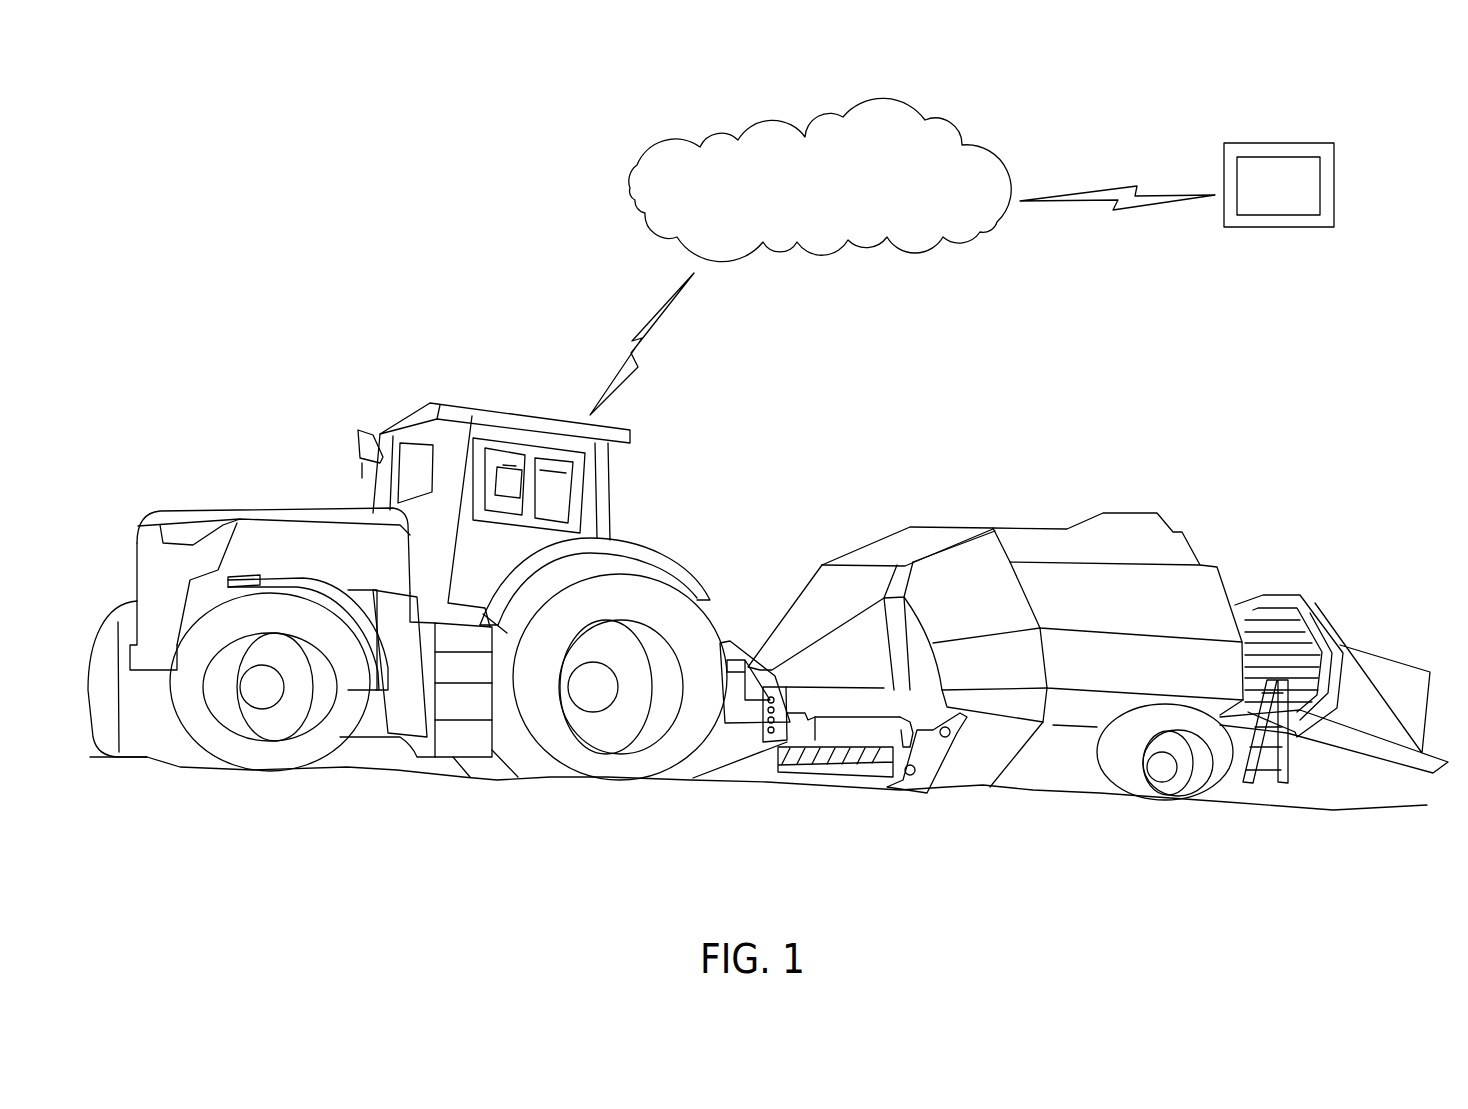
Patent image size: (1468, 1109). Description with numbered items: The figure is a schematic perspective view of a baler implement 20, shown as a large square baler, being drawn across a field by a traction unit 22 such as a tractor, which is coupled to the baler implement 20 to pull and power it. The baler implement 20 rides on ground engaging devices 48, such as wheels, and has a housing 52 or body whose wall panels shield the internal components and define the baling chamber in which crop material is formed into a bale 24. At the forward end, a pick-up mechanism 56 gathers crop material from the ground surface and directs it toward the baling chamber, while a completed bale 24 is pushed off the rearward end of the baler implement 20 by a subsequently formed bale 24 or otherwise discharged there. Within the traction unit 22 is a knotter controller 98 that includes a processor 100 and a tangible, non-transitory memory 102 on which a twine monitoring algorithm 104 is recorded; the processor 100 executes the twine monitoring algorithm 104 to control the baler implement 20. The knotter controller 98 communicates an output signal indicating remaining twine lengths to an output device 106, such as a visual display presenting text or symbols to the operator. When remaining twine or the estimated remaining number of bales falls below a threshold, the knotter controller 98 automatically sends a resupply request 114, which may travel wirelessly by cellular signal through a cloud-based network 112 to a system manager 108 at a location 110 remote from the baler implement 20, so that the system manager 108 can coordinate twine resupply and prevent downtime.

The baler implement 20 is at (855, 409).
The traction unit 22 is at (439, 540).
The bale 24 is at (1403, 680).
The ground engaging devices 48 is at (1213, 795).
The housing 52 is at (1098, 649).
The pick-up mechanism 56 is at (857, 790).
The knotter controller 98 is at (607, 473).
The processor 100 is at (557, 490).
The memory 102 is at (523, 470).
The twine monitoring algorithm 104 is at (507, 478).
The output device 106 is at (418, 470).
The system manager 108 is at (1303, 198).
The location 110 is at (1280, 148).
The cloud-based network 112 is at (845, 192).
The resupply request 114 is at (658, 317).